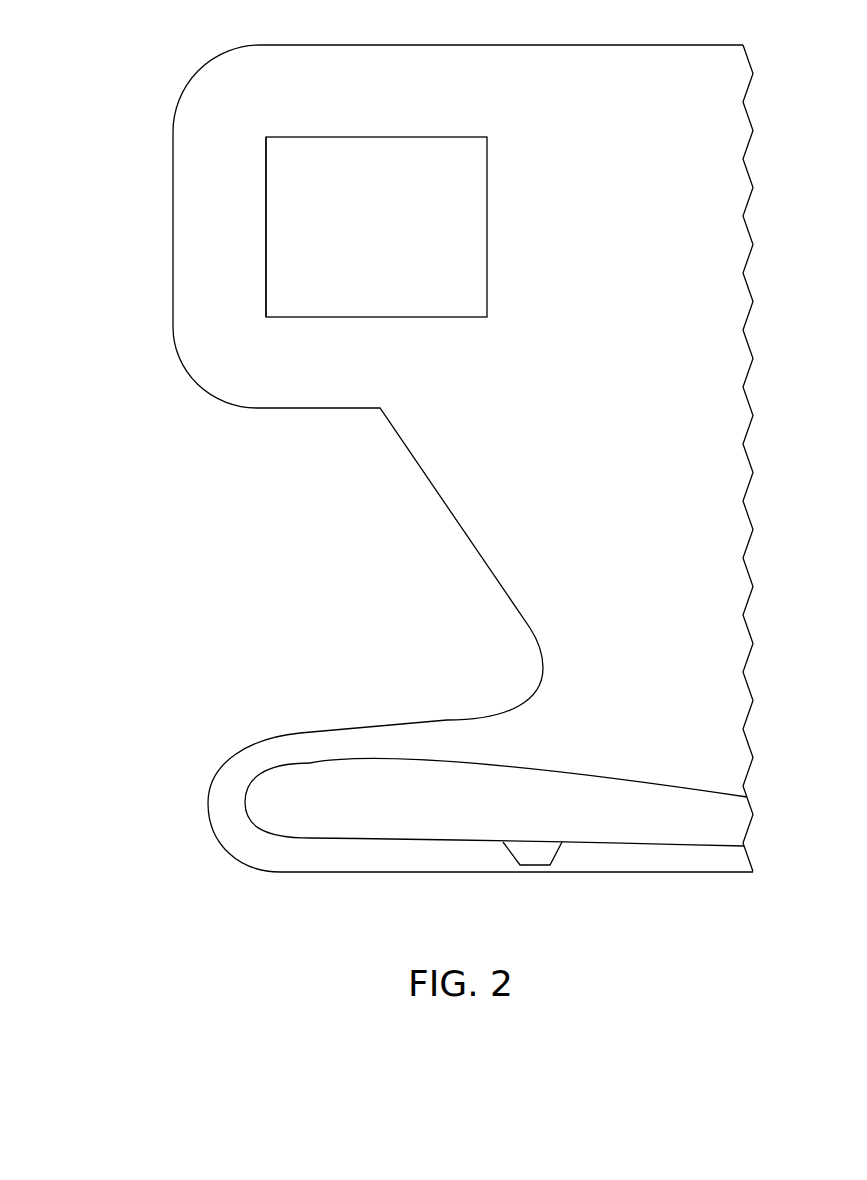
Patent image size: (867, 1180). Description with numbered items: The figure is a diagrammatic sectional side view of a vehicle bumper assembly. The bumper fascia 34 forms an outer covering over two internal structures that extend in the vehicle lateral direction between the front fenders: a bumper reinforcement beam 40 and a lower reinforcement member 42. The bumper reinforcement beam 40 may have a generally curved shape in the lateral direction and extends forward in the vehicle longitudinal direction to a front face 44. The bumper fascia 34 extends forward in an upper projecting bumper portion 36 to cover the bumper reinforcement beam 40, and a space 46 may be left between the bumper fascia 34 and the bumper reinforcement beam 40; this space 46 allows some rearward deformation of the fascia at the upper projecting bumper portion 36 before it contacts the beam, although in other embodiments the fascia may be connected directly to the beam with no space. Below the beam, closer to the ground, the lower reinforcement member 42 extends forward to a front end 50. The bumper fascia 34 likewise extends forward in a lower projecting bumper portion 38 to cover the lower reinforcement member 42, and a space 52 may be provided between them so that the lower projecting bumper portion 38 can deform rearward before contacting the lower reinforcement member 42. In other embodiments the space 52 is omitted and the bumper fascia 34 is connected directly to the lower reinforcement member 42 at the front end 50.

The bumper fascia 34 is at (173, 295).
The upper projecting bumper portion 36 is at (162, 193).
The lower projecting bumper portion 38 is at (178, 862).
The bumper reinforcement beam 40 is at (460, 222).
The lower reinforcement member 42 is at (446, 757).
The front face 44 is at (266, 256).
The space 46 is at (217, 140).
The front end 50 is at (245, 792).
The space 52 is at (207, 803).